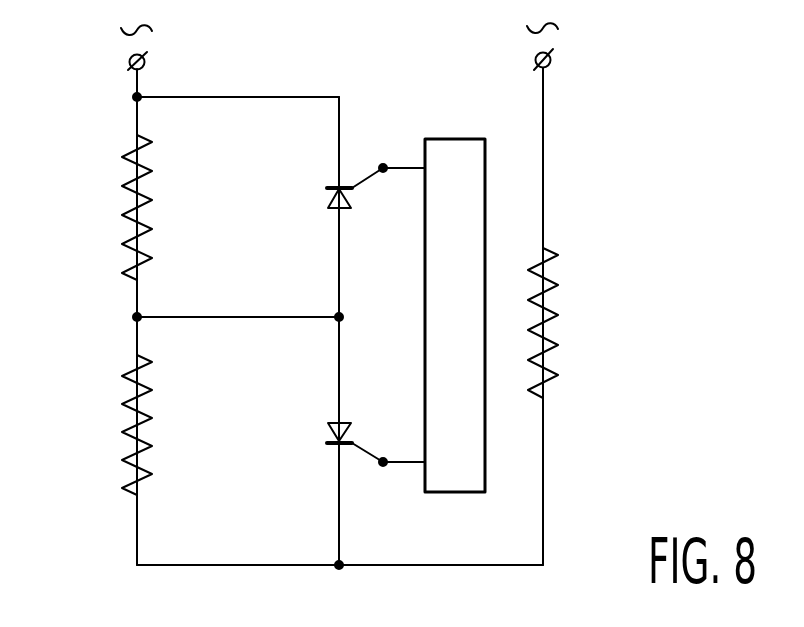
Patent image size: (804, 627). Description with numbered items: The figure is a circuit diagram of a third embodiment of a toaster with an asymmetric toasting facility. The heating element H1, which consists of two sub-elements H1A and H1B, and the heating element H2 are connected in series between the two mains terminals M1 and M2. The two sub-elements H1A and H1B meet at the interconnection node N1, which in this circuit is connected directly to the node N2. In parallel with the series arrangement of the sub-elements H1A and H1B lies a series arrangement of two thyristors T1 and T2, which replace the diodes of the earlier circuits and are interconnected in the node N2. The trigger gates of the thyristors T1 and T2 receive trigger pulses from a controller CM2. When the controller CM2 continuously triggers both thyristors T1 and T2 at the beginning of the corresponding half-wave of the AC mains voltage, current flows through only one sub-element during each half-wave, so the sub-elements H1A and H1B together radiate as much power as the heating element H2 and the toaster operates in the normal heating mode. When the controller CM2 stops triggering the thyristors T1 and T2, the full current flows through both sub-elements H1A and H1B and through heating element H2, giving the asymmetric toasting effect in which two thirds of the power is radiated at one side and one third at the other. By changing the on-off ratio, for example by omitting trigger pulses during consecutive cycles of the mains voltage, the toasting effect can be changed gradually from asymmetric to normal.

The terminal M1 is at (129, 59).
The terminal M2 is at (552, 62).
The heating element H1 is at (92, 315).
The sub-element H1A is at (128, 195).
The sub-element H1B is at (128, 415).
The heating element H2 is at (557, 307).
The interconnection node N1 is at (133, 318).
The node N2 is at (343, 318).
The thyristor T1 is at (327, 192).
The thyristor T2 is at (327, 435).
The controller CM2 is at (456, 138).